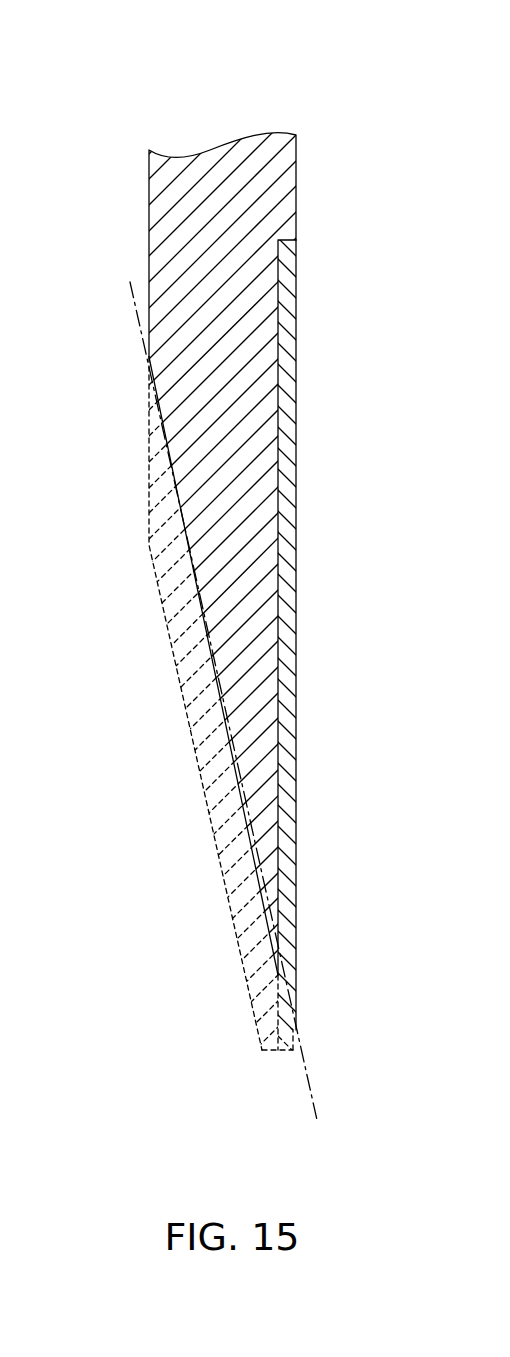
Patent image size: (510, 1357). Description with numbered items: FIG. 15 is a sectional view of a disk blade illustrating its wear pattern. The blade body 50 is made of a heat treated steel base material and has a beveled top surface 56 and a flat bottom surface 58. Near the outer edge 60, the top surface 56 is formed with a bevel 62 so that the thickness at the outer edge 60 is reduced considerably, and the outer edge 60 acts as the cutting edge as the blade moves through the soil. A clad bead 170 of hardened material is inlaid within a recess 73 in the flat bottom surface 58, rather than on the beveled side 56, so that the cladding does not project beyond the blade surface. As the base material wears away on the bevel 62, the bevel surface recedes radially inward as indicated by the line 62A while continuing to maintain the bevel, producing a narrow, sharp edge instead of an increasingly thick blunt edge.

The blade body 50 is at (142, 66).
The bottom surface 58 is at (296, 215).
The insert / reinforcing strip 73 is at (284, 252).
The clad bead 170 is at (296, 620).
The top surface 56 is at (148, 258).
The bevel 62 is at (206, 805).
The line indicating worn bevel surface 62A is at (210, 651).
The outer edge 60 is at (286, 1051).